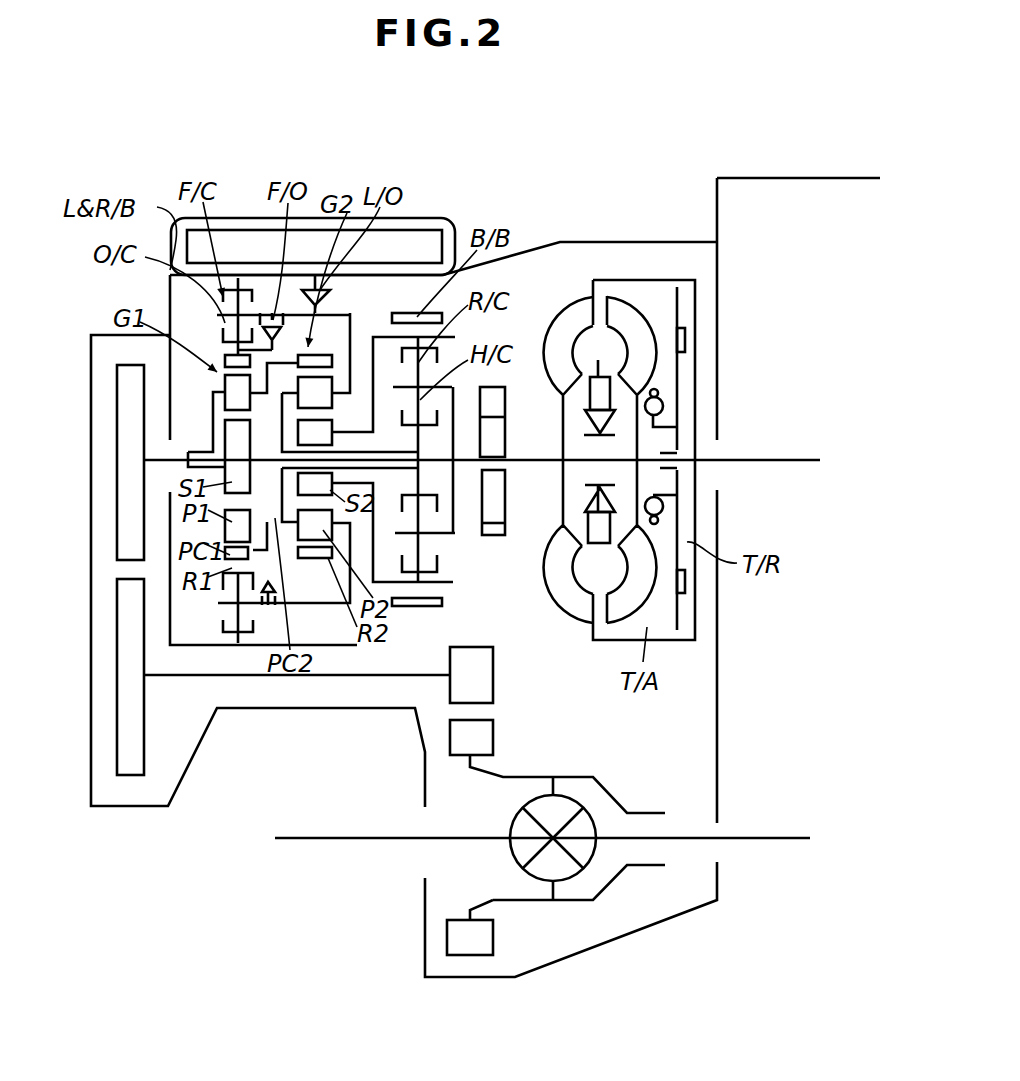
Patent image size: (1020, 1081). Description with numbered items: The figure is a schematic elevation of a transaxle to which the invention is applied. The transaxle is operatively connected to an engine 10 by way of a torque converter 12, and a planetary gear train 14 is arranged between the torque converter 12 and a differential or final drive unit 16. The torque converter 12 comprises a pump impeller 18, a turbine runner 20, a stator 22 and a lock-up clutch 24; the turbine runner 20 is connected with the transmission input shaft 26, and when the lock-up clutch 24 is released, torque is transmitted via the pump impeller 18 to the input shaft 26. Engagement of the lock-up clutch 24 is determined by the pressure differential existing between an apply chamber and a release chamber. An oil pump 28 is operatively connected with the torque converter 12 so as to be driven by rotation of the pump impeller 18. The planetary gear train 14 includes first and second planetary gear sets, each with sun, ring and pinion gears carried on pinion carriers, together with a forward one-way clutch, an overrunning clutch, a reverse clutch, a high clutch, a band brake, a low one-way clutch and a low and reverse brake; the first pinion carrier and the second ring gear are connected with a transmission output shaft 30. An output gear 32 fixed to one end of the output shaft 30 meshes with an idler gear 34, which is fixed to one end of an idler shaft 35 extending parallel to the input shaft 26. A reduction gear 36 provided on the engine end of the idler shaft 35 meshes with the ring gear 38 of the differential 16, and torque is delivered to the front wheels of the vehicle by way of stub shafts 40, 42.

The engine 10 is at (755, 177).
The torque converter 12 is at (612, 272).
The planetary gear train 14 is at (268, 297).
The differential or final drive unit 16 is at (575, 788).
The pump impeller 18 is at (575, 313).
The turbine runner 20 is at (627, 315).
The stator 22 is at (598, 395).
The lock-up clutch 24 is at (678, 372).
The transmission input shaft 26 is at (527, 455).
The oil pump 28 is at (497, 535).
The transmission output shaft 30 is at (173, 460).
The output gear 32 is at (117, 485).
The idler gear 34 is at (120, 682).
The idler shaft 35 is at (408, 675).
The reduction gear 36 is at (493, 658).
The ring gear 38 is at (473, 955).
The stub shaft 40 is at (382, 842).
The stub shaft 42 is at (777, 842).